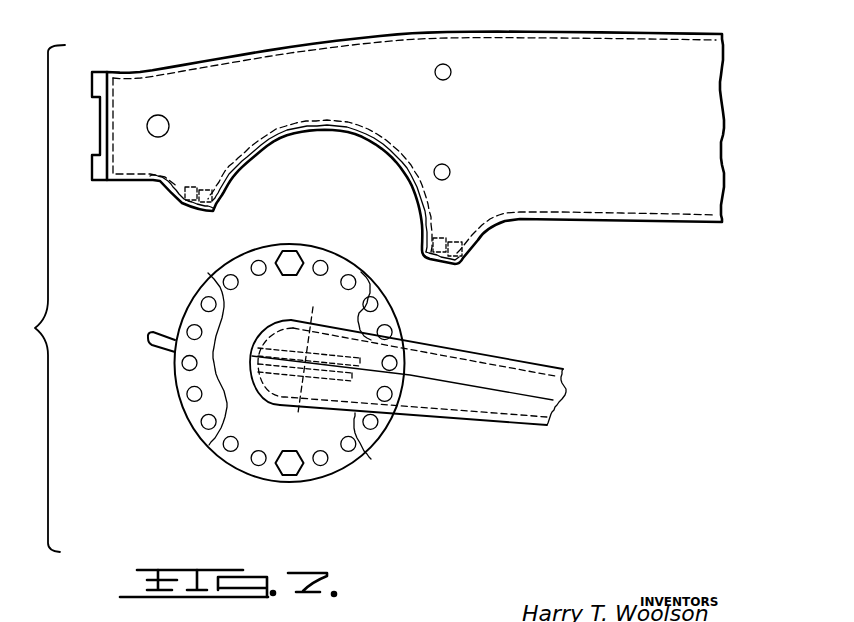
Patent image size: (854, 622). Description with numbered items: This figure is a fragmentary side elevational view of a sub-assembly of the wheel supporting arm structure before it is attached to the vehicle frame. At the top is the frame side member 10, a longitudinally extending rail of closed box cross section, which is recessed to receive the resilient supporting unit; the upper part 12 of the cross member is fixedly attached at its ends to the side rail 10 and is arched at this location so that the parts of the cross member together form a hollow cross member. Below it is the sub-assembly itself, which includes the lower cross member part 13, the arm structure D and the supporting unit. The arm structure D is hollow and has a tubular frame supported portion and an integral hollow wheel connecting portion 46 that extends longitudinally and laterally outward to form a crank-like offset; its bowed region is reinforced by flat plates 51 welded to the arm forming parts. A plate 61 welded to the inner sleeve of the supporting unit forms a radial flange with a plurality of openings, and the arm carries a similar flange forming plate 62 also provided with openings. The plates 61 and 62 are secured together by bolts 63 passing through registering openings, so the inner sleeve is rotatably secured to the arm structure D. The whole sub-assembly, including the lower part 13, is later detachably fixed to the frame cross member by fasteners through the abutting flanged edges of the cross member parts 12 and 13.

The side member 10 is at (598, 222).
The upper part of cross member 12 is at (232, 179).
The lower part of cross member 13 is at (152, 346).
The wheel connecting portion 46 is at (470, 418).
The flat plate 51 is at (313, 307).
The plate 61 is at (205, 283).
The flange forming plate 62 is at (320, 254).
The bolt 63 is at (306, 224).
The arm structure D is at (408, 383).